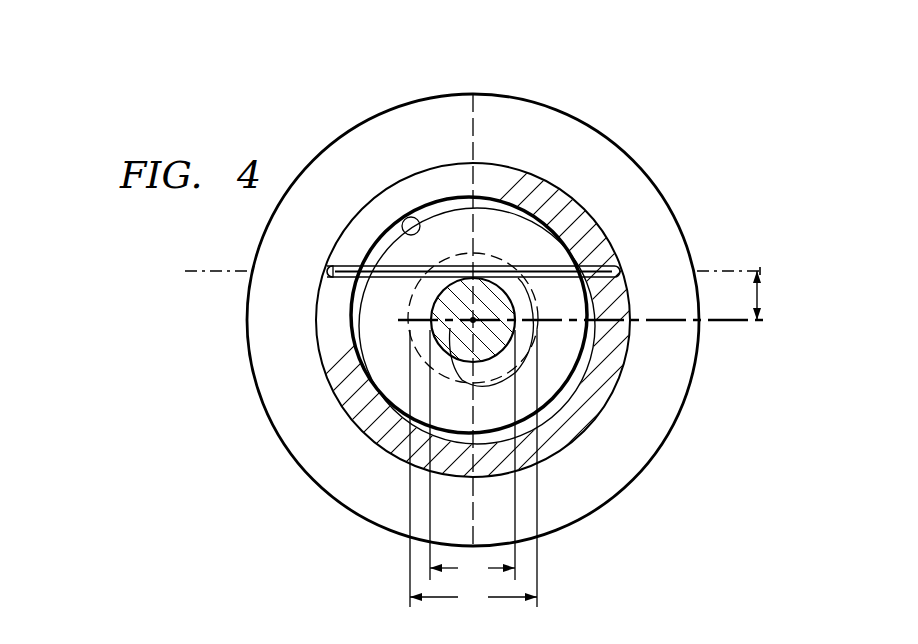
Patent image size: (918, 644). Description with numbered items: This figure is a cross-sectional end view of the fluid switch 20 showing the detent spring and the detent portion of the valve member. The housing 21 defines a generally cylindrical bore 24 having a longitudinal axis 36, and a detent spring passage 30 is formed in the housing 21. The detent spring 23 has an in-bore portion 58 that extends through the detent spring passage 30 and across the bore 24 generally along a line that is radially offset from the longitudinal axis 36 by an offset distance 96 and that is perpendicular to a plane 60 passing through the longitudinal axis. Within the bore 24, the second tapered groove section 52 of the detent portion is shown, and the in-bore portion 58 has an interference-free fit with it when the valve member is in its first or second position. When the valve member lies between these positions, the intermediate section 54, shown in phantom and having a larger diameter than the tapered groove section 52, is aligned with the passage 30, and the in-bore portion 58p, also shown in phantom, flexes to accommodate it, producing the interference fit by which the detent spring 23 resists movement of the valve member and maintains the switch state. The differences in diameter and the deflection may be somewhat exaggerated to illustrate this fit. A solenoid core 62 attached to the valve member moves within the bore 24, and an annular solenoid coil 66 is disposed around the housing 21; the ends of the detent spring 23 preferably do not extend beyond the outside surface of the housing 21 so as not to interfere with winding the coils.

The fluid switch 20 is at (306, 98).
The annular solenoid coil 66 is at (617, 153).
The plane 60 is at (470, 124).
The housing 21 is at (603, 231).
The intermediate section 54 is at (367, 377).
The solenoid core 62 is at (570, 355).
The cylindrical bore 24 is at (402, 232).
The in-bore portion (phantom) 58p is at (440, 256).
The longitudinal axis 36 is at (455, 378).
The second tapered groove section 52 is at (519, 300).
The detent spring passage 30 is at (327, 271).
The detent spring 23 is at (348, 266).
The in-bore portion 58 is at (397, 270).
The offset distance 96 is at (760, 293).